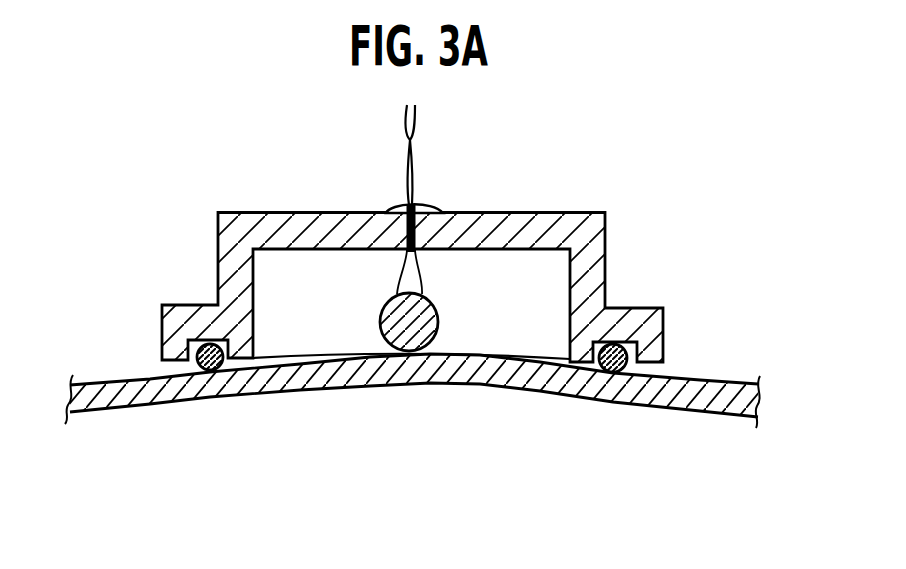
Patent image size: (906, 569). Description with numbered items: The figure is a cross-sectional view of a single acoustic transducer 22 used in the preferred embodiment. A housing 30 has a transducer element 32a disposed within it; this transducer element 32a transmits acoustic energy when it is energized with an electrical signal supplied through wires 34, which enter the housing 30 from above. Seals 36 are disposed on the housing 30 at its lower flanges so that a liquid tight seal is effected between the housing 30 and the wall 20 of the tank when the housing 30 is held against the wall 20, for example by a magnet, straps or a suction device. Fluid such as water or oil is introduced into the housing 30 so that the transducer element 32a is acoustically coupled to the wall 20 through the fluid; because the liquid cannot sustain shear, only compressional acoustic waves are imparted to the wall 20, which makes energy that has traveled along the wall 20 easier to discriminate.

The wall 20 is at (723, 412).
The transducer 22 is at (146, 151).
The housing 30 is at (585, 212).
The transducer element 32a is at (438, 317).
The wires 34 is at (412, 138).
The seals 36 is at (219, 397).